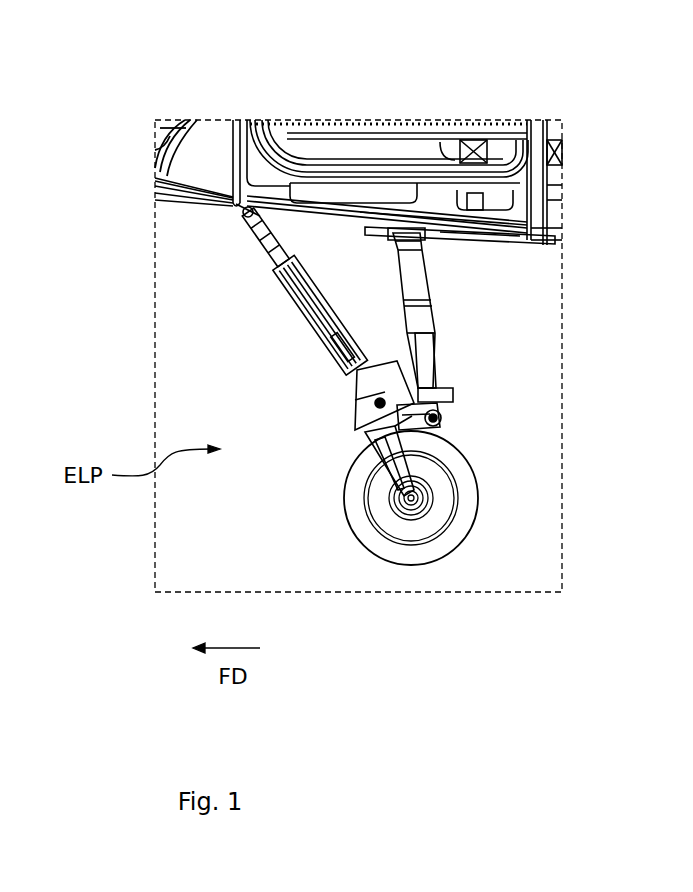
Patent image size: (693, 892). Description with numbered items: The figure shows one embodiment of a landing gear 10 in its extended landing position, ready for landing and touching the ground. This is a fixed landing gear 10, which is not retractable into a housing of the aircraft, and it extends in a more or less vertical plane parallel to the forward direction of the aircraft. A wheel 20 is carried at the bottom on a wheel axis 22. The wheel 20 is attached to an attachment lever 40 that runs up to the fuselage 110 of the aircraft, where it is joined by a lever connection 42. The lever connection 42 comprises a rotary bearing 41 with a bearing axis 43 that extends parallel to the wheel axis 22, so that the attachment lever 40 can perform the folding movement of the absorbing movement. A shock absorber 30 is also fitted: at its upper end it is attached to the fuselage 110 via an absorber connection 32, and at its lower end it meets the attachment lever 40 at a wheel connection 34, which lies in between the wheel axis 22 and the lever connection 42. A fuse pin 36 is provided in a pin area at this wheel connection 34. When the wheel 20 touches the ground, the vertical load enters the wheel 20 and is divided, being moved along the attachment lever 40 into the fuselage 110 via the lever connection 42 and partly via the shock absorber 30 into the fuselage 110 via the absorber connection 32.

The landing gear 10 is at (212, 345).
The wheel 20 is at (403, 520).
The wheel axis 22 is at (420, 497).
The shock absorber 30 is at (425, 283).
The absorber connection 32 is at (405, 228).
The wheel connection 34 is at (442, 400).
The fuse pin 36 is at (445, 418).
The attachment lever 40 is at (312, 332).
The rotary bearing 41 is at (240, 208).
The lever connection 42 is at (240, 232).
The bearing axis 43 is at (195, 199).
The fuselage 110 is at (154, 146).